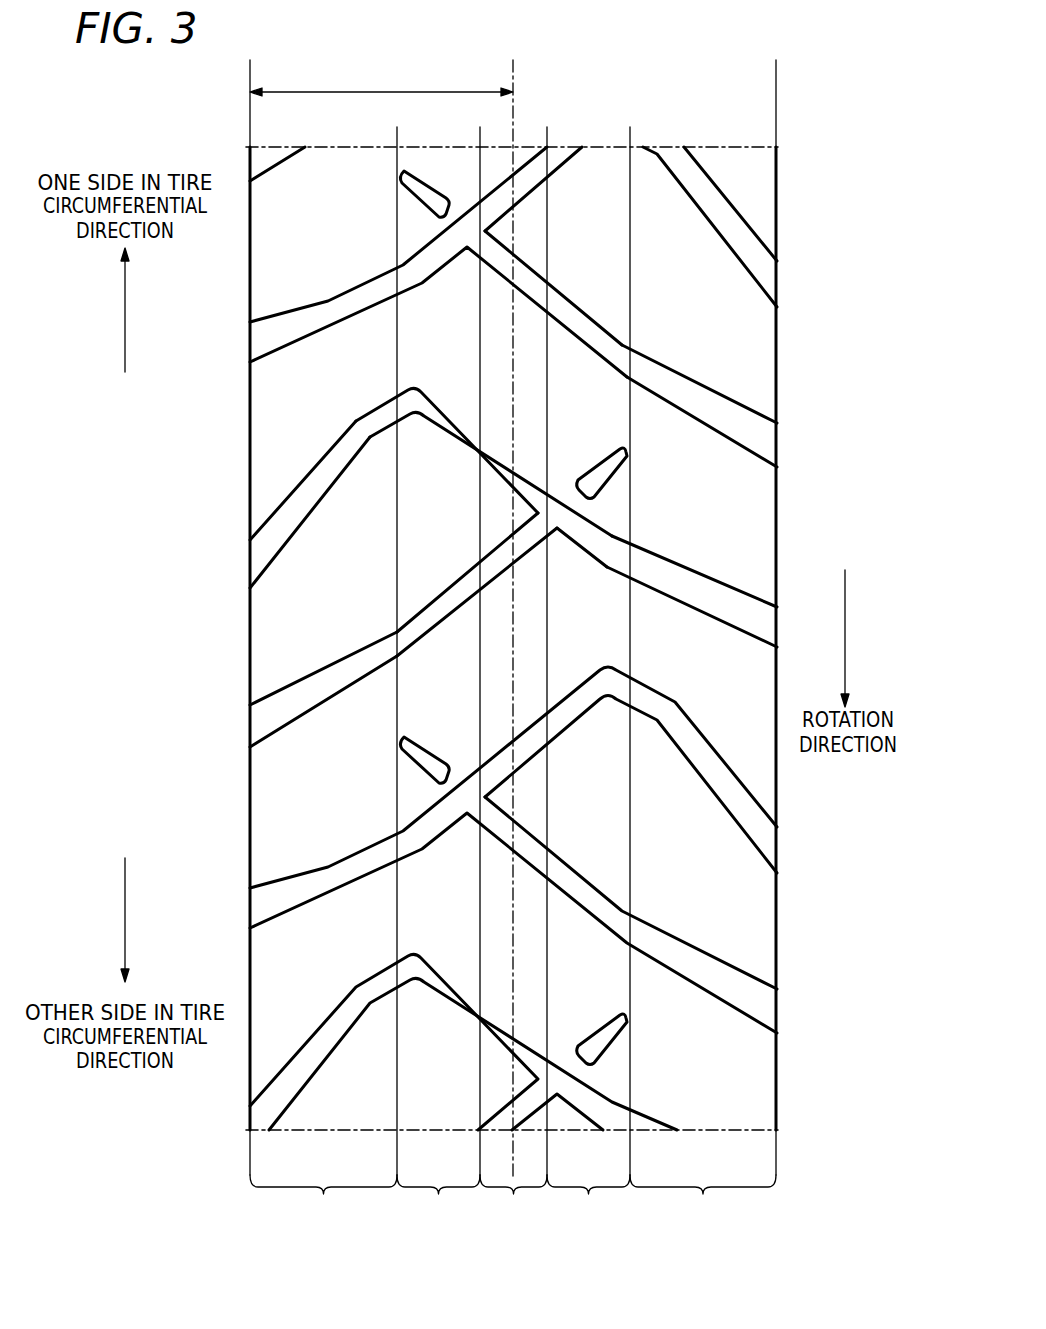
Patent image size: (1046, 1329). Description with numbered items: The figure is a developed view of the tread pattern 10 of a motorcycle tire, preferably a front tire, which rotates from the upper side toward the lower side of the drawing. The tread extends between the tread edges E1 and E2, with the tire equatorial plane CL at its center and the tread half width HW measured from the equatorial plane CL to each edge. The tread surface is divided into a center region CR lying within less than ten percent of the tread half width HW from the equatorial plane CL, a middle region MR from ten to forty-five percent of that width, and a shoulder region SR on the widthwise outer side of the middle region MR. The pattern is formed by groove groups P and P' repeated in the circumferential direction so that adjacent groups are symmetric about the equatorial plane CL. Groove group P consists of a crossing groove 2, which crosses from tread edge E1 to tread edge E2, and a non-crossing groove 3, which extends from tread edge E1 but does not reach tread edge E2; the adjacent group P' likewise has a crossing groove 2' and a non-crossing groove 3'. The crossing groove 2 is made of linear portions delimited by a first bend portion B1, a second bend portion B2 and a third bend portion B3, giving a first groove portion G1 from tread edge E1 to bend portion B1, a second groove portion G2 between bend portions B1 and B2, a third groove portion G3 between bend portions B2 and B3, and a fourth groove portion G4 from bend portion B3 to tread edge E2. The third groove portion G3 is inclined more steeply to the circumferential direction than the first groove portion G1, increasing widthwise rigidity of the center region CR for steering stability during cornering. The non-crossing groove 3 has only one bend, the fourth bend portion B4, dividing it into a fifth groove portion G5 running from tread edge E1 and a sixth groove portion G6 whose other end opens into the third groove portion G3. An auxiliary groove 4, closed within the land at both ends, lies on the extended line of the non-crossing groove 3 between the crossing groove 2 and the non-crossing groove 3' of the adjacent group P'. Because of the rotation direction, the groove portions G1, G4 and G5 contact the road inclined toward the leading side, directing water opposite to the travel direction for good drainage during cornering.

The tread pattern 10 is at (788, 177).
The crossing groove 2 is at (692, 595).
The crossing groove 2' is at (492, 234).
The non-crossing groove 3 is at (299, 668).
The non-crossing groove 3' is at (710, 321).
The auxiliary groove 4 is at (602, 466).
The groove group P is at (281, 558).
The groove group P' is at (745, 281).
The first groove portion G1 is at (311, 476).
The second groove portion G2 is at (386, 406).
The third groove portion G3 is at (455, 433).
The fourth groove portion G4 is at (655, 583).
The fifth groove portion G5 is at (698, 402).
The sixth groove portion G6 is at (566, 307).
The first bend portion B1 is at (362, 423).
The second bend portion B2 is at (424, 399).
The third bend portion B3 is at (602, 556).
The fourth bend portion B4 is at (627, 348).
The tread edge E1 is at (249, 606).
The tread edge E2 is at (775, 606).
The tire equatorial plane CL is at (513, 607).
The tread half width HW is at (381, 81).
The shoulder region SR is at (513, 1199).
The middle region MR is at (513, 1199).
The center region CR is at (513, 1199).